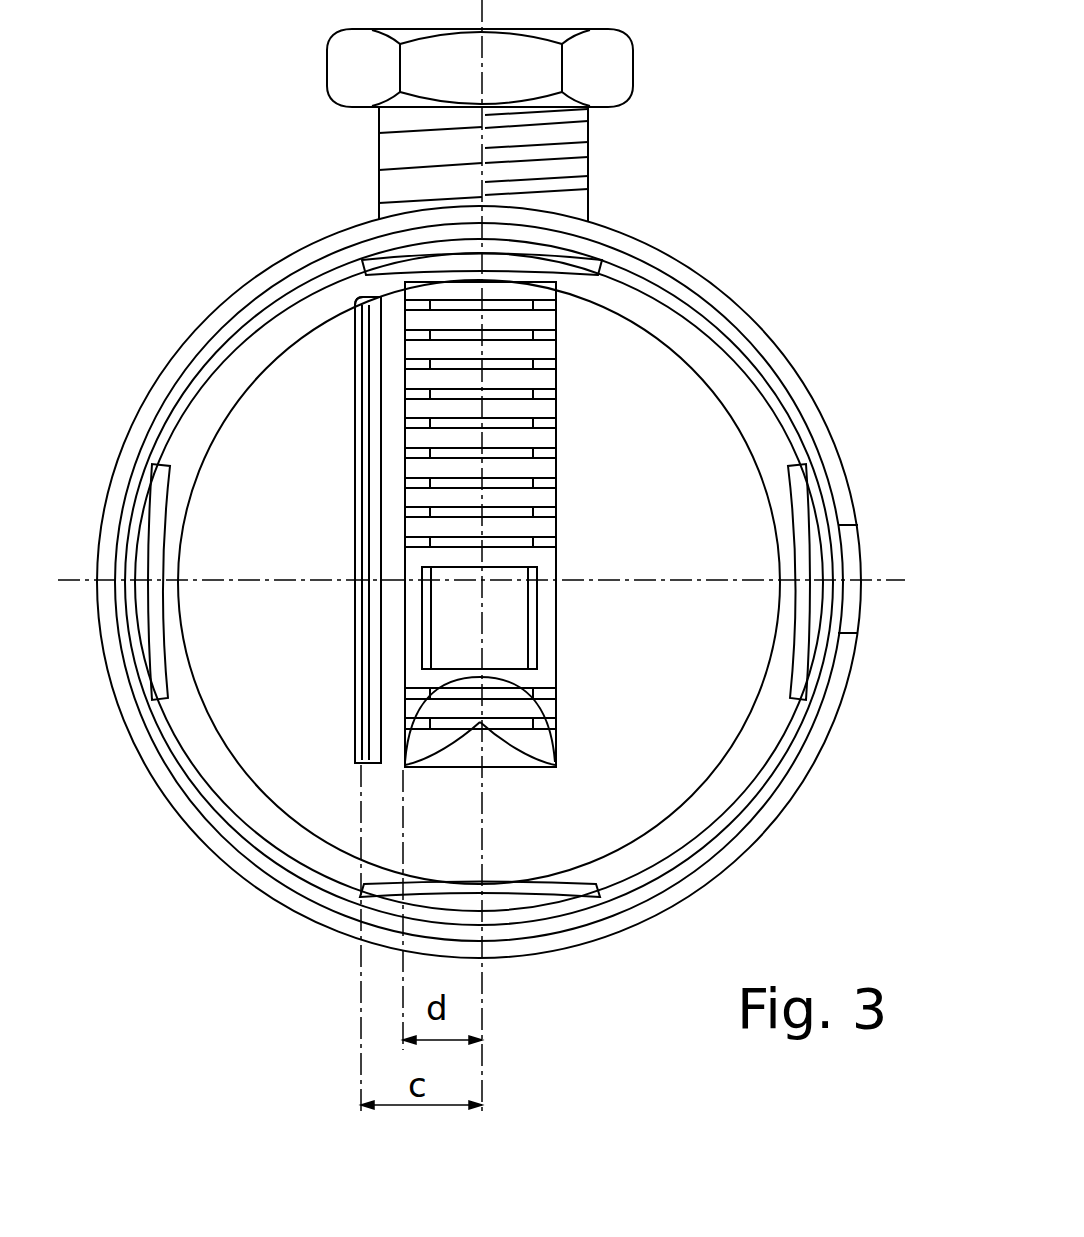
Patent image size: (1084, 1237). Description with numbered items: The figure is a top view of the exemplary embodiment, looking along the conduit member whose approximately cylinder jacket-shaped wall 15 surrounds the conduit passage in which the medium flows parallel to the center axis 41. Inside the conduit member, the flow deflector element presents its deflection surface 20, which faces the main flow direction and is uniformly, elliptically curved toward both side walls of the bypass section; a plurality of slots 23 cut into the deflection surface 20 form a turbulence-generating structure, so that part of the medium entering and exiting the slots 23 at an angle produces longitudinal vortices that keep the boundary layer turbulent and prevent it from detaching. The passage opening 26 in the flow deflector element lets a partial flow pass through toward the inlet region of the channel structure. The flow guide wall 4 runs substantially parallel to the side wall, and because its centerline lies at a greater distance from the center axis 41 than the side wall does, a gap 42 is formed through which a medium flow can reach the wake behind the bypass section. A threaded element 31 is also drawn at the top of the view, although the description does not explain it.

The flow guide wall 4 is at (365, 415).
The cylinder jacket-shaped wall 15 is at (735, 297).
The deflection surface 20 is at (547, 383).
The slots 23 is at (547, 457).
The passage opening 26 is at (508, 650).
The threaded bolt 31 is at (590, 165).
The center axis 41 is at (482, 584).
The gap 42 is at (393, 328).